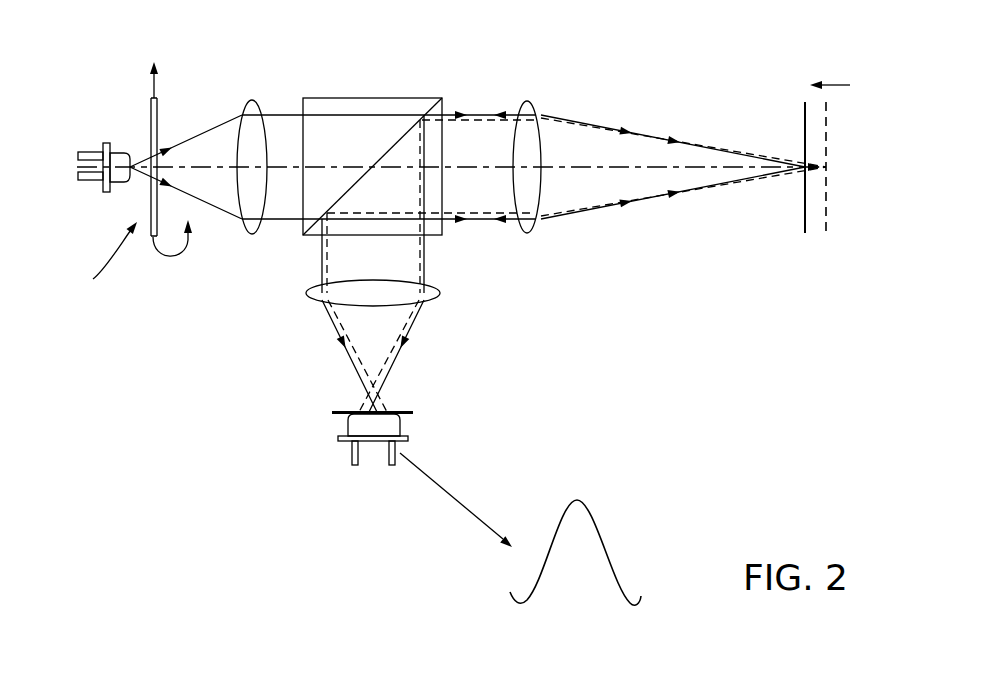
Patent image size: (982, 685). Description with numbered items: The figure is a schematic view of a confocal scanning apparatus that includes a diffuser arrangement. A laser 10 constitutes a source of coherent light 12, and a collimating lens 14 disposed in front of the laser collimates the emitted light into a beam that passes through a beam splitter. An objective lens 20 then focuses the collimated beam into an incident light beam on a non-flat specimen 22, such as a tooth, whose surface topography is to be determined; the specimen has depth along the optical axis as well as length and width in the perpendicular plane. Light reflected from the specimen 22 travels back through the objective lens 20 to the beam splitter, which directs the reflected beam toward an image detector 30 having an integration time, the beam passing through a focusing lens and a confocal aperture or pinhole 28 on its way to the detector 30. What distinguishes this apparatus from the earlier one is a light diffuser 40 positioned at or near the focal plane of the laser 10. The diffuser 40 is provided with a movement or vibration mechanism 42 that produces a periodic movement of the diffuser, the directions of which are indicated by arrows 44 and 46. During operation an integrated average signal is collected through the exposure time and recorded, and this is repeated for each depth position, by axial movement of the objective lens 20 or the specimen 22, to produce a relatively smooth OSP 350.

The laser 10 is at (106, 192).
The coherent light 12 is at (120, 153).
The collimating lens 14 is at (252, 100).
The objective lens 20 is at (527, 100).
The specimen 22 is at (805, 102).
The confocal aperture or pinhole 28 is at (335, 412).
The image detector 30 is at (388, 428).
The light diffuser 40 is at (158, 99).
The movement/vibration mechanism 42 is at (98, 258).
The arrow 44 is at (150, 100).
The arrow 46 is at (170, 256).
The OSP 350 is at (602, 542).